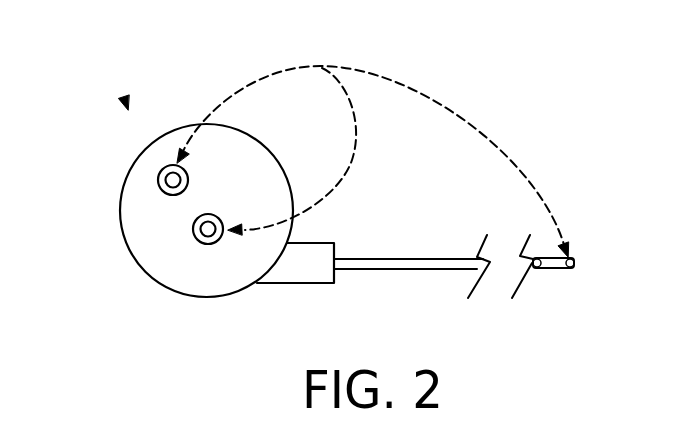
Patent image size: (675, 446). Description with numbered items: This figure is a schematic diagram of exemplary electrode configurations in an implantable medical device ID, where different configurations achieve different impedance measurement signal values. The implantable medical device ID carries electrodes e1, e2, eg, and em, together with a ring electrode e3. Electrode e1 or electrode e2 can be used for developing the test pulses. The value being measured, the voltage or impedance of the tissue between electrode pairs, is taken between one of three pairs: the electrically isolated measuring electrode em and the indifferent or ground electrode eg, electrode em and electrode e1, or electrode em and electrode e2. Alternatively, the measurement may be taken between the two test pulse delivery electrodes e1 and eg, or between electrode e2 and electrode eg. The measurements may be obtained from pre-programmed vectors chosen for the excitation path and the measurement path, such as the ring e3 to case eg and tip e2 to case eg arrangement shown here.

The implantable medical device ID is at (128, 110).
The electrode e1 is at (157, 178).
The electrically isolated measuring electrode em is at (193, 234).
The indifferent or ground electrode eg is at (205, 268).
The electrode e2 is at (574, 261).
The ring electrode e3 is at (540, 268).